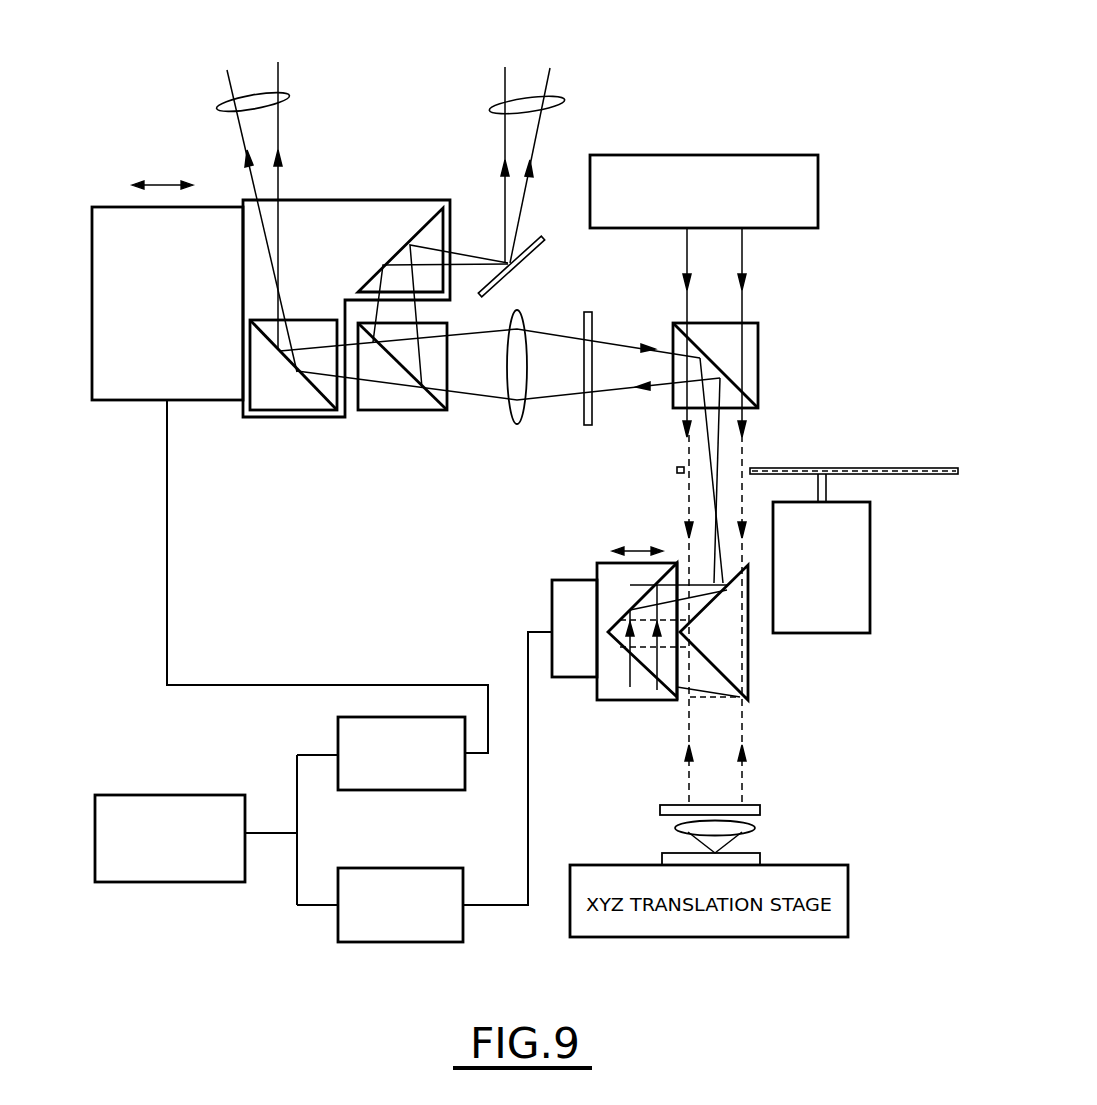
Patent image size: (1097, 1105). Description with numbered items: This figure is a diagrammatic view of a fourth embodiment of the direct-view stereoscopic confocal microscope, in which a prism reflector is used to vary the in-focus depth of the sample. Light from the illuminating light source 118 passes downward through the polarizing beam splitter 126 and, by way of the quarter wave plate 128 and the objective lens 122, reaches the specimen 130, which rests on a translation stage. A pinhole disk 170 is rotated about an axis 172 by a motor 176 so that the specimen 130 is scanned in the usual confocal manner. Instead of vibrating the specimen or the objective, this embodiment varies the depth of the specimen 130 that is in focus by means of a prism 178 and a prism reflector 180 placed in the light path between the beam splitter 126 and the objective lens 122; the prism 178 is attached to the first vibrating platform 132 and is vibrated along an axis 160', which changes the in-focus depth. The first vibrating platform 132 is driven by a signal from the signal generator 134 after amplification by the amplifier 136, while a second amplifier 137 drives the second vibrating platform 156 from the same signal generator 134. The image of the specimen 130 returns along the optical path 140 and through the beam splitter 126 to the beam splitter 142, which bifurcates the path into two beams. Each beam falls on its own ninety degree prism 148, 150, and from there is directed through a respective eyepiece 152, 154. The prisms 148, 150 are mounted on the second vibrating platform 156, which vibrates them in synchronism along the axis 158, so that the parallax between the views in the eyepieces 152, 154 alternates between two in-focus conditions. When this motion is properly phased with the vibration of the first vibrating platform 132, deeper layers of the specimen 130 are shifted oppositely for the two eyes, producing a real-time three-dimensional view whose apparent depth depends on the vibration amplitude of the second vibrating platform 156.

The illuminating light source 118 is at (819, 205).
The objective lens 122 is at (753, 828).
The polarizing beam splitter 126 is at (760, 370).
The quarter wave plate 128 is at (760, 807).
The specimen 130 is at (760, 853).
The first vibrating platform 132 is at (563, 580).
The signal generator 134 is at (207, 885).
The amplifier 136 is at (410, 943).
The amplifier 137 is at (420, 792).
The optical path 140 is at (615, 383).
The beam splitter 142 is at (412, 410).
The 90 degree prism 148 is at (307, 377).
The 90 degree prism 150 is at (433, 210).
The eyepiece 152 is at (288, 92).
The eyepiece 154 is at (560, 100).
The second vibrating platform 156 is at (152, 405).
The axis 158 is at (172, 152).
The axis 160' is at (635, 523).
The disk 170 is at (865, 467).
The axis 172 is at (830, 490).
The motor 176 is at (872, 565).
The prism 178 is at (642, 703).
The prism reflector 180 is at (753, 673).